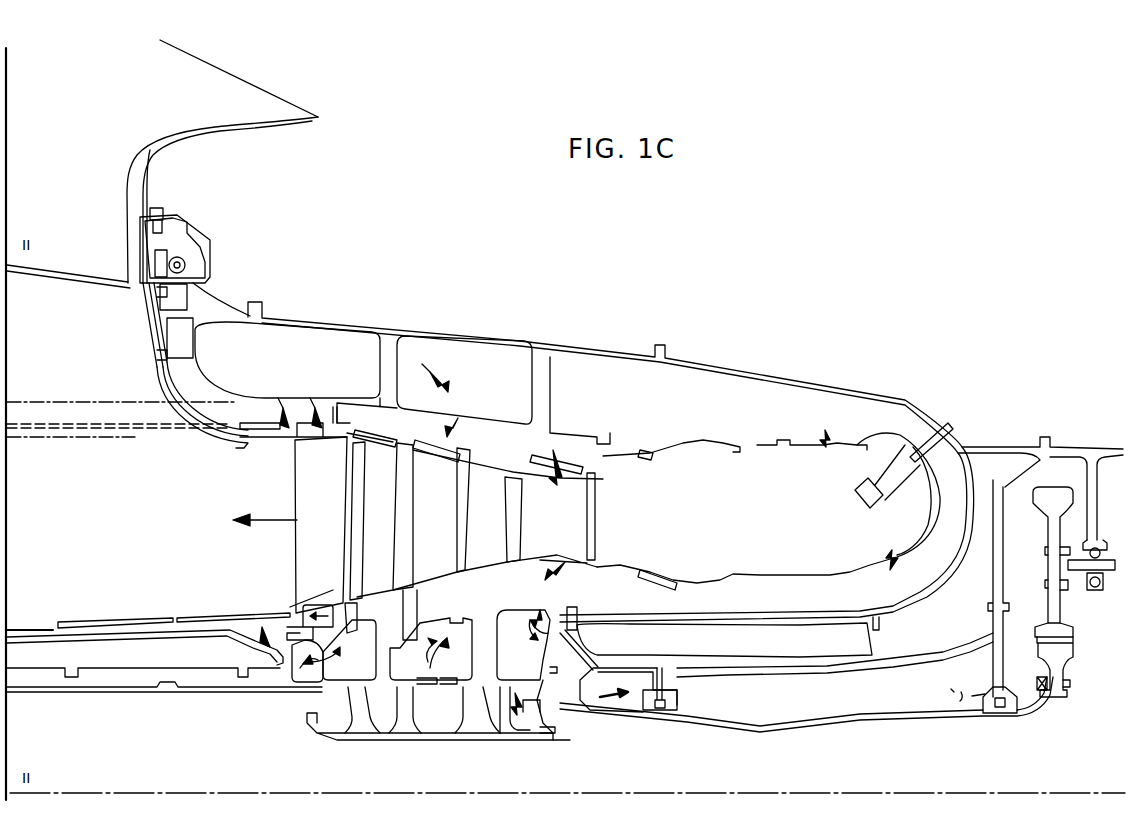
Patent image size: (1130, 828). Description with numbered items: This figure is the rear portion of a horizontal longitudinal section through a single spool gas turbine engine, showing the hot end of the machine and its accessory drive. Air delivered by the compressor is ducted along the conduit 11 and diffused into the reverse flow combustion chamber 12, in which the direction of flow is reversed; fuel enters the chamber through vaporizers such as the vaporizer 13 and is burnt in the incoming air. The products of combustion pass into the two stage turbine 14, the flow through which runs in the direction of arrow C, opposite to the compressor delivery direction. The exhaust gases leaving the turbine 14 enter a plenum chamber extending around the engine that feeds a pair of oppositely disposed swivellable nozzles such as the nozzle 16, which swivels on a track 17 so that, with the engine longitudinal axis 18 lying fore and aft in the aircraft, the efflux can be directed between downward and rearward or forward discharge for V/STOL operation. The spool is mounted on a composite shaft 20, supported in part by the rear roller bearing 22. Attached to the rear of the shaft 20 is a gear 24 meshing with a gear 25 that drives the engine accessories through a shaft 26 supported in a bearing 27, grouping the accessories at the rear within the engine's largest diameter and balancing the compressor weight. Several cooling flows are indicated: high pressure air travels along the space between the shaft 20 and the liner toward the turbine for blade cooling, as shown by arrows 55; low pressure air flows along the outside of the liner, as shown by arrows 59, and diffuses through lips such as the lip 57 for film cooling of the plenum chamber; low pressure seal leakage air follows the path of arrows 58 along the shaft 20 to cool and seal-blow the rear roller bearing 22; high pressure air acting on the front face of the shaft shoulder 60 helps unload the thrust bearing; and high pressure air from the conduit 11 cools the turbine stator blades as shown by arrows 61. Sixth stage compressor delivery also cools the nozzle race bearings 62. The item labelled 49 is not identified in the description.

The conduit 11 is at (313, 366).
The reverse flow combustion chamber 12 is at (810, 437).
The vaporizer 13 is at (862, 487).
The two stage turbine 14 is at (455, 497).
The swivellable nozzle 16 is at (225, 133).
The track 17 is at (215, 283).
The longitudinal axis 18 is at (613, 791).
The composite shaft 20 is at (875, 728).
The roller bearing 22 is at (680, 710).
The gear 24 is at (1073, 659).
The gear 25 is at (1073, 632).
The shaft 26 is at (1113, 565).
The bearing 27 is at (1093, 591).
The guide vanes 49 is at (293, 410).
The arrows 55 is at (340, 658).
The lip 57 is at (178, 610).
The arrows 58 is at (606, 697).
The arrows 59 is at (272, 622).
The shaft shoulder 60 is at (555, 731).
The arrows 61 is at (525, 716).
The nozzle race bearings 62 is at (184, 262).